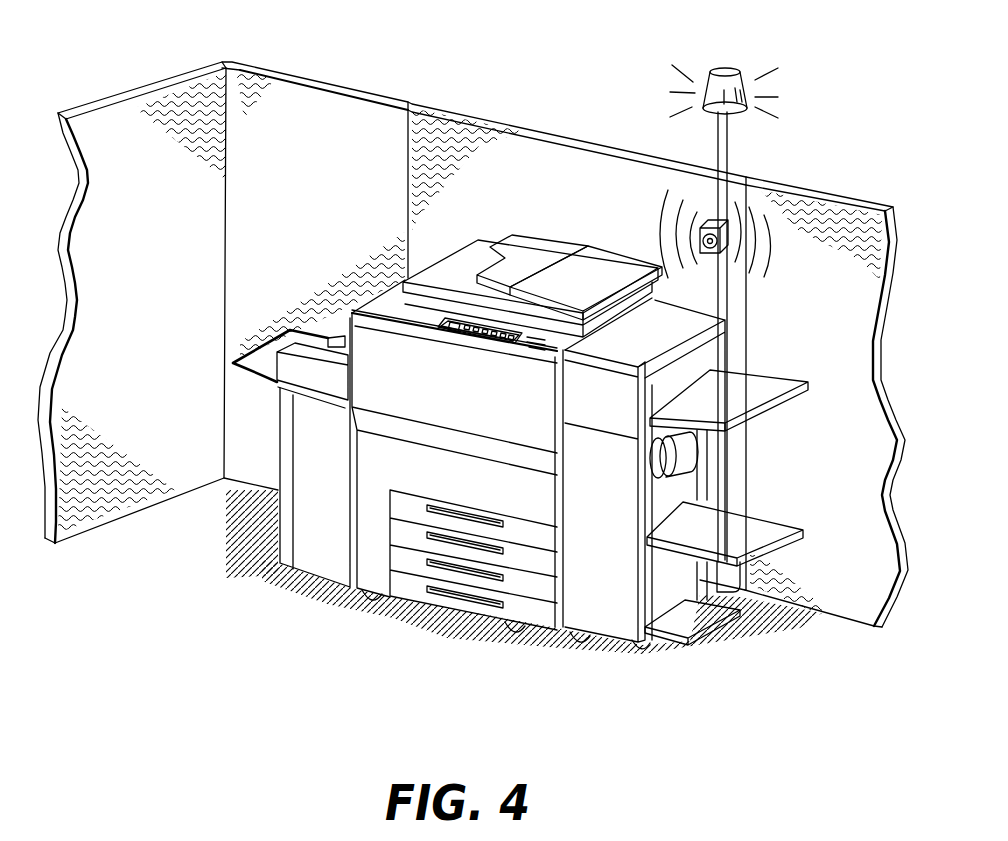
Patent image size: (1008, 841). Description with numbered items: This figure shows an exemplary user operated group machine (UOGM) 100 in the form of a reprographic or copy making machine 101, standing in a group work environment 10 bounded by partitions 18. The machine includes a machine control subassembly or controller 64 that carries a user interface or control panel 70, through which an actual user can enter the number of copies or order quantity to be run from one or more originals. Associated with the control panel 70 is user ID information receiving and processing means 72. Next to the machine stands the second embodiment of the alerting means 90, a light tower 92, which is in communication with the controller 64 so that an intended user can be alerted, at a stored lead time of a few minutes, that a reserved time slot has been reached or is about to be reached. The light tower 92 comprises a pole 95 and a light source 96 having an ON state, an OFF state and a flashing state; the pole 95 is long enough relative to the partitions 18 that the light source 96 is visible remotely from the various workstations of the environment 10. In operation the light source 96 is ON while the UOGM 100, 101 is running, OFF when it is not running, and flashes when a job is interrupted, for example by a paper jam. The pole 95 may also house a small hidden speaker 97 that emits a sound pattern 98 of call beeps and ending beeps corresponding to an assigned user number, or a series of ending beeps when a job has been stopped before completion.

The group work environment 10 is at (194, 524).
The partitions 18 is at (185, 73).
The machine control subassembly or controller 64 is at (432, 334).
The user interface or control panel 70 is at (462, 334).
The user ID information receiving and processing means 72 is at (522, 342).
The alerting means 90 is at (744, 48).
The light tower 92 is at (712, 294).
The pole 95 is at (718, 152).
The light source 96 is at (722, 72).
The speaker 97 is at (712, 226).
The sound pattern 98 is at (776, 256).
The user operated group machine (UOGM) 100 is at (518, 170).
The reprographic or copy making machine 101 is at (312, 548).